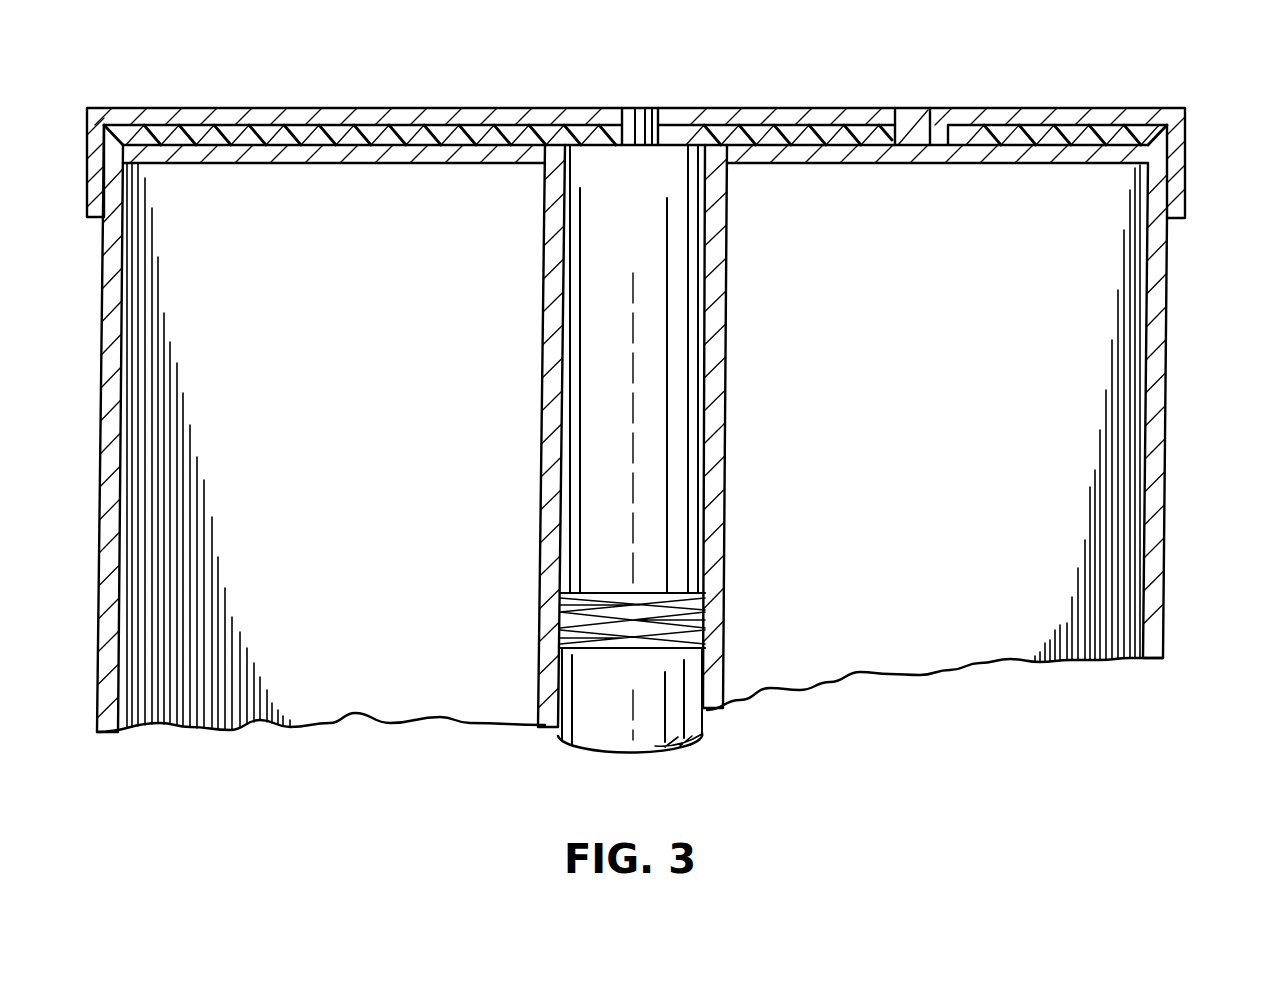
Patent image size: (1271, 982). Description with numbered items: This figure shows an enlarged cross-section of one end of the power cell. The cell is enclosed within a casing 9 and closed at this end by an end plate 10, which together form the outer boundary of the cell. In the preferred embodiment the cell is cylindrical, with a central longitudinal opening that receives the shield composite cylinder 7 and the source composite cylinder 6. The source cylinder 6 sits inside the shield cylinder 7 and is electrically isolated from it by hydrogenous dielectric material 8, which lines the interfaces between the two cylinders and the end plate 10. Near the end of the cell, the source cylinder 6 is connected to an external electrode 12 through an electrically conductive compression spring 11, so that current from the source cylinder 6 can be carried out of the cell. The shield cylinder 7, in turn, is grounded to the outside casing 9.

The source composite cylinder 6 is at (645, 700).
The shield composite cylinder 7 is at (415, 665).
The hydrogenous dielectric material 8 is at (127, 135).
The casing 9 is at (1163, 545).
The end plate 10 is at (403, 112).
The electrically conductive compression spring 11 is at (705, 640).
The external electrode 12 is at (642, 107).